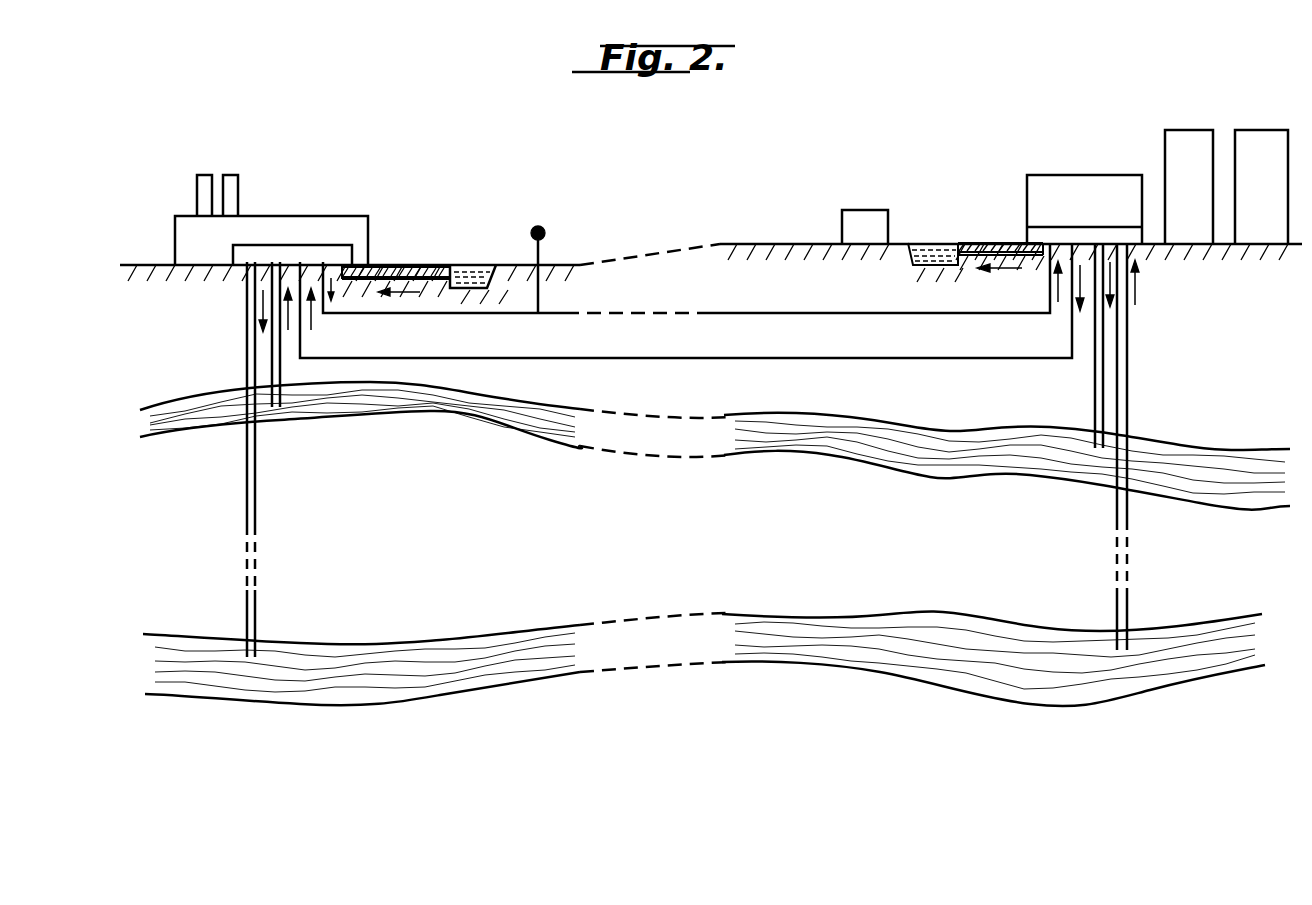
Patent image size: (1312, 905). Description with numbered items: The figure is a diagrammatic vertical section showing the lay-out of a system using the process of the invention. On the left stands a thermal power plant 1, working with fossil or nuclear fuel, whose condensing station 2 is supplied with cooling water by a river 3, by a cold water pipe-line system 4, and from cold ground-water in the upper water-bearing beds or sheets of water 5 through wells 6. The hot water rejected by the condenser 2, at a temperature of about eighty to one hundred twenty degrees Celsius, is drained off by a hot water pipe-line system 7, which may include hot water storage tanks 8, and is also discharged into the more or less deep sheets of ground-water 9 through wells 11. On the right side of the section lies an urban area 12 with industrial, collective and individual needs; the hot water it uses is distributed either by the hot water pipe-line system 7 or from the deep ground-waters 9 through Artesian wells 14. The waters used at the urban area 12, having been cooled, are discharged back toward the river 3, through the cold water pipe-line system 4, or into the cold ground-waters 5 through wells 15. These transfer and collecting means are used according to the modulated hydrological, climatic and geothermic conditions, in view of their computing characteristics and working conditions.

The thermal power plant 1 is at (183, 225).
The condensing station 2 is at (306, 250).
The river 3 is at (462, 268).
The cold water pipe-line system 4 is at (400, 358).
The cold ground-water 5 is at (422, 400).
The wells 6 is at (272, 372).
The hot water pipe-line system 7 is at (380, 315).
The hot water storage tanks 8 is at (543, 226).
The deep sheets of ground-water 9 is at (362, 660).
The wells 11 is at (248, 474).
The urban area 12 is at (1122, 185).
The Artesian wells 14 is at (1128, 504).
The wells 15 is at (1095, 391).